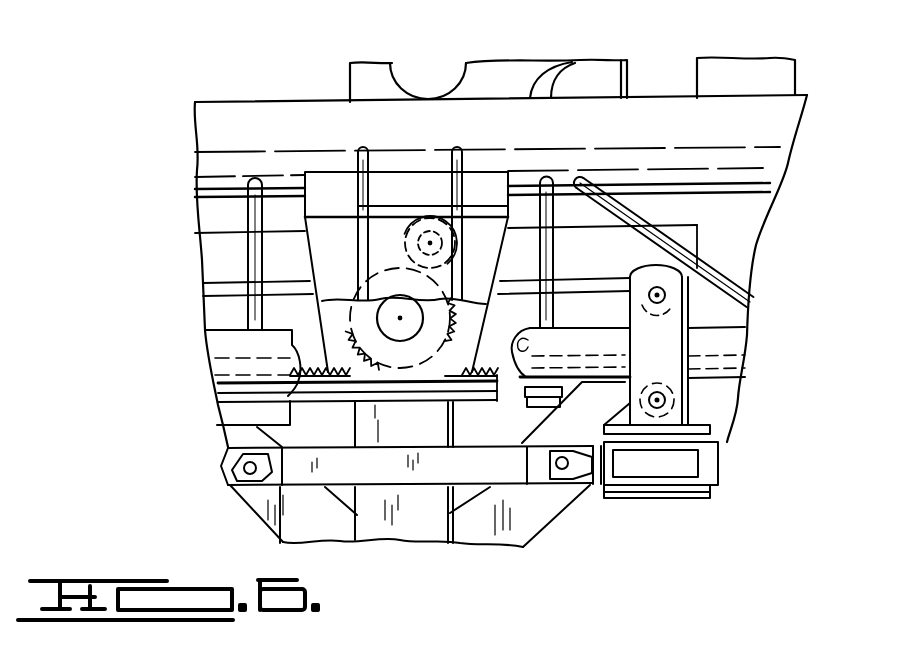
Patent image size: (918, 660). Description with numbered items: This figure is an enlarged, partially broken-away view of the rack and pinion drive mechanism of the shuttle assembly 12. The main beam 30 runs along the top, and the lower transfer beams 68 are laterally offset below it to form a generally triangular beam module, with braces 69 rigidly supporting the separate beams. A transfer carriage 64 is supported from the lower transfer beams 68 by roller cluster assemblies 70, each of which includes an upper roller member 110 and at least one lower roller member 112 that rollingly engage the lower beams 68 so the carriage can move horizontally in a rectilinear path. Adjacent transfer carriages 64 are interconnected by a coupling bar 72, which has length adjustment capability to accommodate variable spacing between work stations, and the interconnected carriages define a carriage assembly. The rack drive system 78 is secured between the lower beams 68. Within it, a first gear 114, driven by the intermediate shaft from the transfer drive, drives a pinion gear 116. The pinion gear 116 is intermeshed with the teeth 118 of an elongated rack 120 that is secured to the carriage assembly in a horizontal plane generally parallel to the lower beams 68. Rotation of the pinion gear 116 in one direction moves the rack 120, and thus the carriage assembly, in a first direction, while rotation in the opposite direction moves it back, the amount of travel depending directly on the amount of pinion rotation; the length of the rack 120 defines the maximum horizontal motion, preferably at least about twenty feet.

The shuttle assembly 12 is at (170, 156).
The main beam 30 is at (776, 123).
The transfer carriage 64 is at (717, 463).
The lower transfer beam 68 is at (217, 344).
The brace 69 is at (762, 245).
The roller cluster assembly 70 is at (692, 345).
The coupling bar 72 is at (440, 487).
The rack drive system 78 is at (320, 168).
The upper roller member 110 is at (665, 309).
The lower roller member 112 is at (675, 404).
The first gear 114 is at (405, 240).
The pinion gear 116 is at (430, 352).
The teeth 118 is at (490, 367).
The rack 120 is at (466, 412).